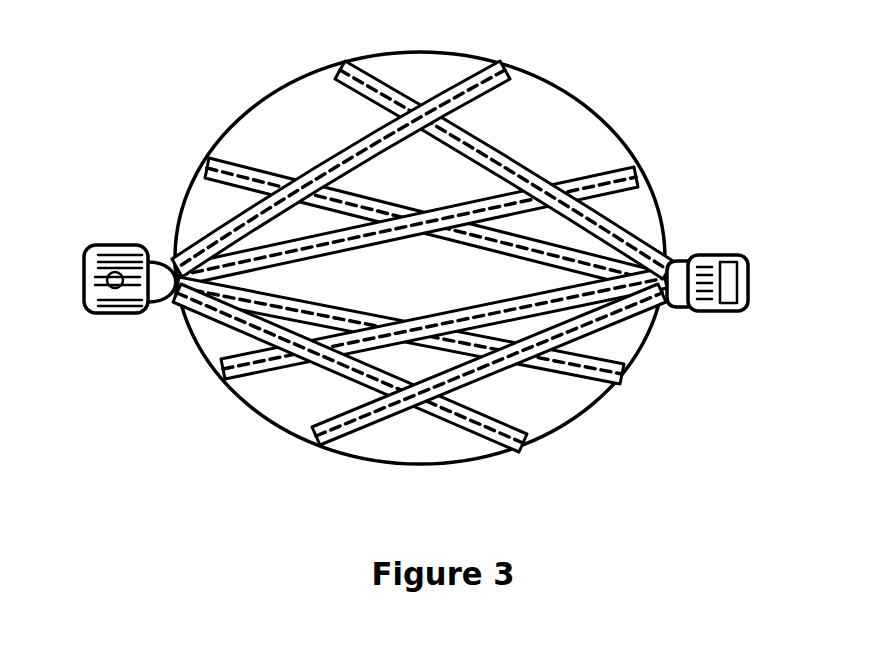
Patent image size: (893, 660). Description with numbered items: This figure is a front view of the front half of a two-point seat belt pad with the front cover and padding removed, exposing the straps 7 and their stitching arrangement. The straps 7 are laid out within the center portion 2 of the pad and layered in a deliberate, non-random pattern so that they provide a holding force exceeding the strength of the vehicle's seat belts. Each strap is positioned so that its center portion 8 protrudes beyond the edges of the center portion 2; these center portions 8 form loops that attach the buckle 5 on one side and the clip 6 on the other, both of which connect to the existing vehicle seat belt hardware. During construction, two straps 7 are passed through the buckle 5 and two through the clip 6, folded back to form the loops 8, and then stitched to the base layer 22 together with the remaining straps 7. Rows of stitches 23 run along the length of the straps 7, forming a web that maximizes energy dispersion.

The center portion 2 is at (185, 112).
The buckle 5 is at (108, 316).
The clip 6 is at (730, 315).
The straps 7 is at (235, 162).
The center portion of the straps 8 is at (152, 262).
The base layer 22 is at (575, 120).
The rows of stitches 23 is at (350, 163).